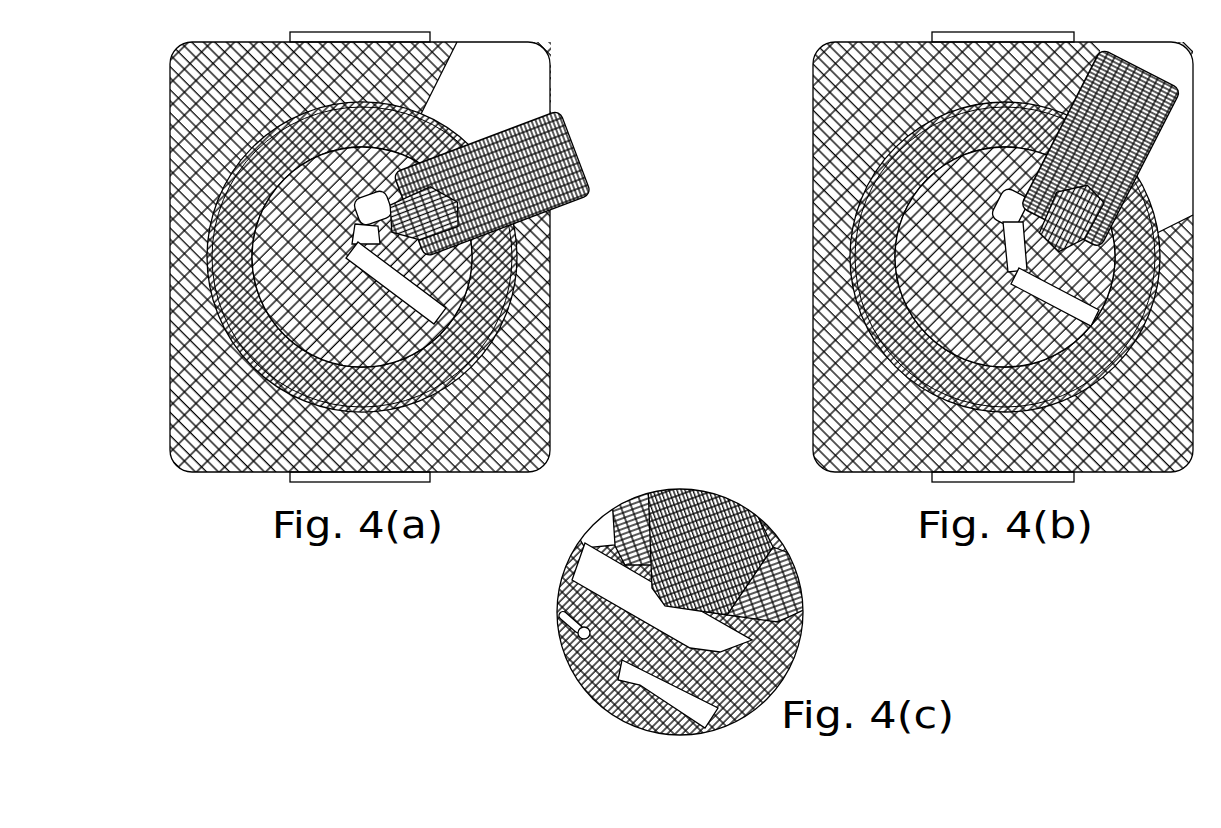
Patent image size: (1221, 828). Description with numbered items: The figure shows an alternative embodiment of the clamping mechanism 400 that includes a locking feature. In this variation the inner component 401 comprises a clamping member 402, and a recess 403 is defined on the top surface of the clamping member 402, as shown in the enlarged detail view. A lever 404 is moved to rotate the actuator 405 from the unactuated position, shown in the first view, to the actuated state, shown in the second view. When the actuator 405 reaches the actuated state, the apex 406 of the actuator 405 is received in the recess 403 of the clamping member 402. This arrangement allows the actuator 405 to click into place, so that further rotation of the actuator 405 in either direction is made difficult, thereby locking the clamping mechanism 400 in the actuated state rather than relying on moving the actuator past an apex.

In FIG. 4A, the connector assembly 400 is at (563, 79).
In FIG. 4B, the connector assembly 400 is at (1003, 257).
In FIG. 4A, the inner component 401 is at (522, 388).
In FIG. 4B, the inner component 401 is at (1005, 257).
In FIG. 4A, the clamping member 402 is at (443, 233).
In FIG. 4B, the clamping member 402 is at (1005, 257).
In FIG. 4C, the recess 403 is at (645, 590).
In FIG. 4A, the lever 404 is at (557, 165).
In FIG. 4B, the lever 404 is at (1100, 148).
In FIG. 4A, the actuator 405 is at (515, 260).
In FIG. 4B, the actuator 405 is at (1070, 217).
In FIG. 4C, the apex 406 is at (627, 655).